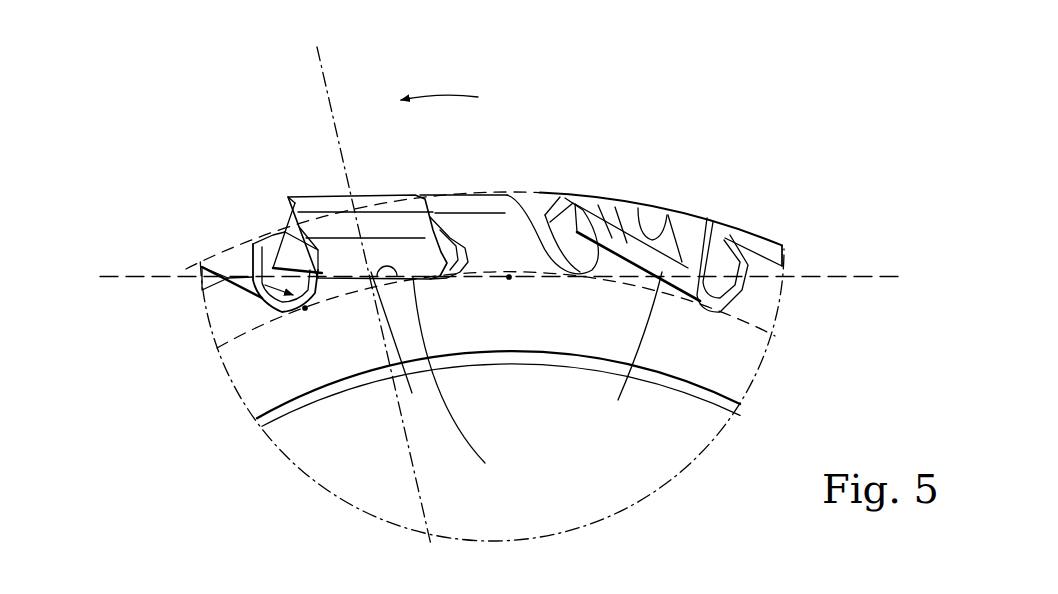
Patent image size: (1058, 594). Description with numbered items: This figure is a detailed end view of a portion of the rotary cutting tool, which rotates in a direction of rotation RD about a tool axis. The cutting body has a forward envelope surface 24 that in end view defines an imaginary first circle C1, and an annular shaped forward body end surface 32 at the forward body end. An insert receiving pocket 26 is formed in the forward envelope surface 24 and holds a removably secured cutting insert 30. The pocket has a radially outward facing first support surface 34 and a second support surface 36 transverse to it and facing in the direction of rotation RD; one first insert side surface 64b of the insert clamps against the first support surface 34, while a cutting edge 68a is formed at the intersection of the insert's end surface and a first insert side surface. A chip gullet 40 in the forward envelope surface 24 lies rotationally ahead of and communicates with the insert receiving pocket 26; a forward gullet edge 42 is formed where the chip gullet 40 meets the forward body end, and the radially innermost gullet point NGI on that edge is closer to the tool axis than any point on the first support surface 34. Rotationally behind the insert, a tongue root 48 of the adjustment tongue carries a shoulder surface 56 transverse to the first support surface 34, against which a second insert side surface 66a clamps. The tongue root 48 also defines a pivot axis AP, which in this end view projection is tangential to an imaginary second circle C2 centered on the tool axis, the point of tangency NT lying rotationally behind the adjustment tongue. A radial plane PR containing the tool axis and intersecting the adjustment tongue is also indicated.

The forward envelope surface 24 is at (770, 233).
The insert receiving pocket 26 is at (617, 238).
The cutting insert 30 is at (333, 196).
The forward body end surface 32 is at (705, 347).
The first support surface 34 is at (516, 348).
The second support surface 36 is at (718, 228).
The chip gullet 40 is at (257, 267).
The forward gullet edge 42 is at (275, 298).
The tongue root 48 is at (670, 233).
The shoulder surface 56 is at (702, 240).
The first insert side surface 64b is at (471, 378).
The second insert side surface 66a is at (365, 262).
The cutting edge 68a is at (288, 197).
The pivot axis AP is at (502, 278).
The radial plane PR is at (371, 284).
The direction of rotation RD is at (420, 103).
The imaginary first circle C1 is at (540, 194).
The imaginary second circle C2 is at (250, 337).
The point of tangency NT is at (511, 280).
The radially innermost gullet point NGI is at (306, 310).